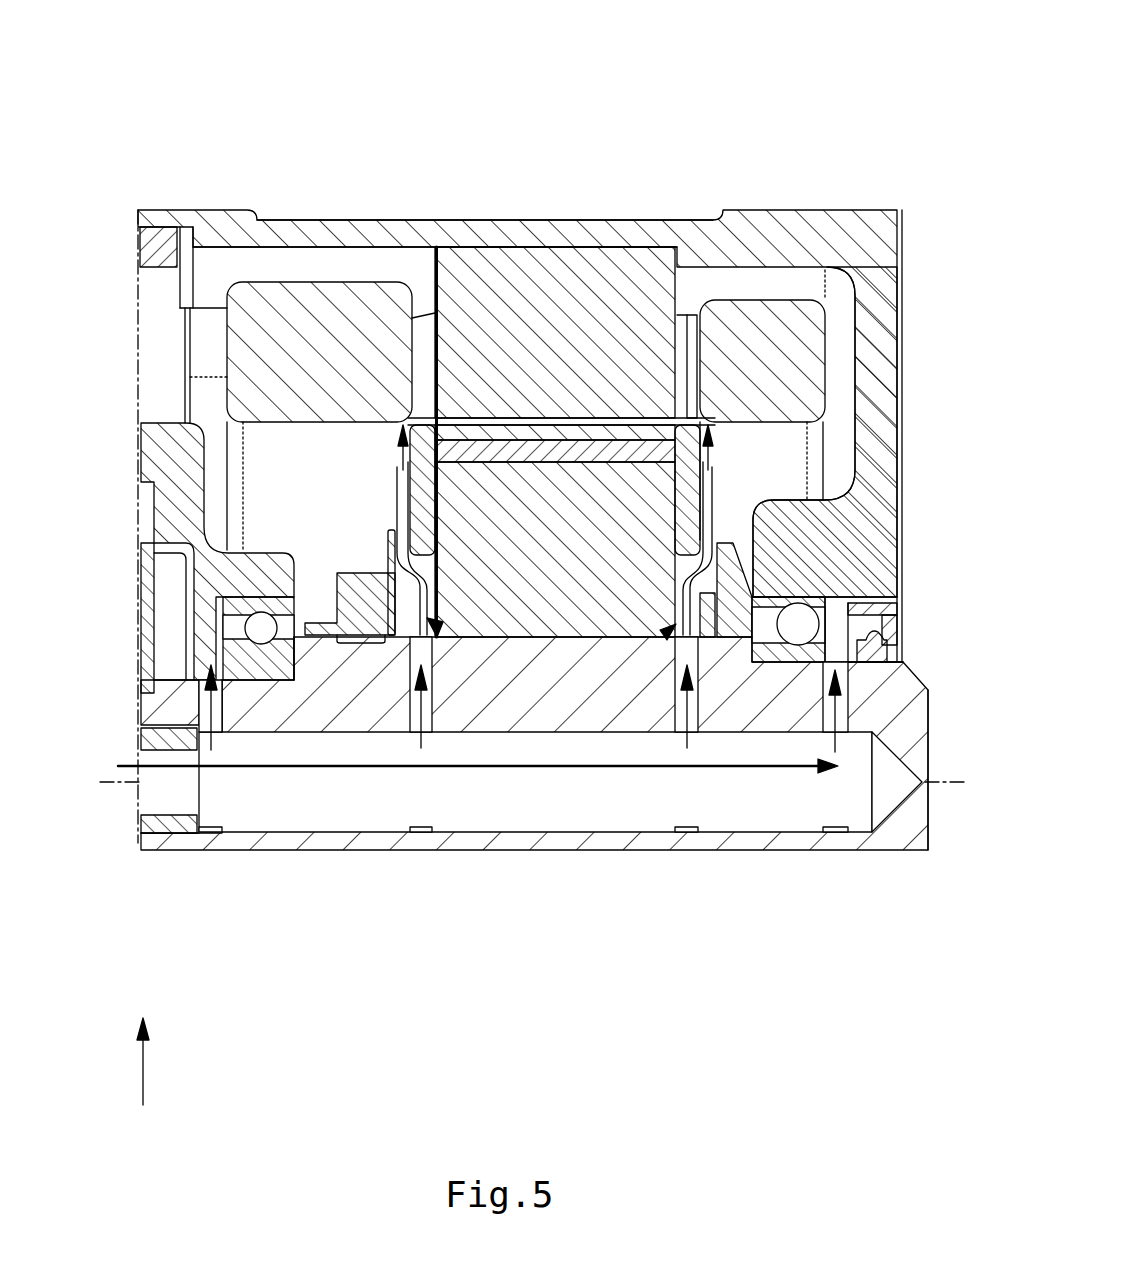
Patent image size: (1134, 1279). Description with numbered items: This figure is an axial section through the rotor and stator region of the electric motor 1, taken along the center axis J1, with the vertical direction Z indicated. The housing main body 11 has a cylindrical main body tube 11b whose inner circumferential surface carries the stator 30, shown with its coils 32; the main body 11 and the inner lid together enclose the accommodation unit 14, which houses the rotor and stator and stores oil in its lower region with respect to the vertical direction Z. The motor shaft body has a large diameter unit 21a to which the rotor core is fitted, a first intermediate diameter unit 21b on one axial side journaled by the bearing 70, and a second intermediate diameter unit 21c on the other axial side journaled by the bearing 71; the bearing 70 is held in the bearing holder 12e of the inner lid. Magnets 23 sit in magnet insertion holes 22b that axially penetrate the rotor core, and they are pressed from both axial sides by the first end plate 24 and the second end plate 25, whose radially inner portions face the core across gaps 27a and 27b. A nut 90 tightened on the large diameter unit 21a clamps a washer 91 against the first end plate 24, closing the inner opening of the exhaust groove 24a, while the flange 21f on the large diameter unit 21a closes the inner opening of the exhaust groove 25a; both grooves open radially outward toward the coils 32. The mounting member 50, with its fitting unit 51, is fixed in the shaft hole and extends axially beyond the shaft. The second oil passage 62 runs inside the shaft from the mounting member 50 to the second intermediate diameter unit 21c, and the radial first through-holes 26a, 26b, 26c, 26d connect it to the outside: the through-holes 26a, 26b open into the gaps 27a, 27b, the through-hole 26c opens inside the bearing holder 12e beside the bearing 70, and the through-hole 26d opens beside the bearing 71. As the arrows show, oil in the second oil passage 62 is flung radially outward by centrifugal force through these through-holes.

The motor 1 is at (888, 65).
The main body 11 is at (612, 210).
The main body tube 11b is at (337, 233).
The accommodation unit 14 is at (220, 264).
The stator 30 is at (694, 282).
The coil 32 is at (793, 358).
The magnet insertion hole 22b is at (520, 447).
The magnet 23 is at (690, 428).
The first end plate 24 is at (425, 433).
The exhaust groove 24a is at (413, 498).
The second end plate 25 is at (690, 508).
The exhaust groove 25a is at (700, 488).
The bearing holder 12e is at (262, 570).
The bearing 70 is at (253, 630).
The bearing 71 is at (800, 622).
The second oil passage 62 is at (773, 820).
The large diameter unit 21a is at (537, 705).
The first intermediate diameter unit 21b is at (252, 712).
The second intermediate diameter unit 21c is at (800, 712).
The flange 21f is at (722, 598).
The first through-hole 26a is at (420, 720).
The first through-hole 26b is at (683, 720).
The first through-hole 26c is at (211, 720).
The first through-hole 26d is at (838, 708).
The gap 27a is at (440, 622).
The gap 27b is at (663, 636).
The nut 90 is at (358, 620).
The washer 91 is at (388, 548).
The mounting member 50 is at (130, 831).
The fitting unit 51 is at (155, 833).
The center axis J1 is at (450, 747).
The vertical direction Z is at (141, 1042).